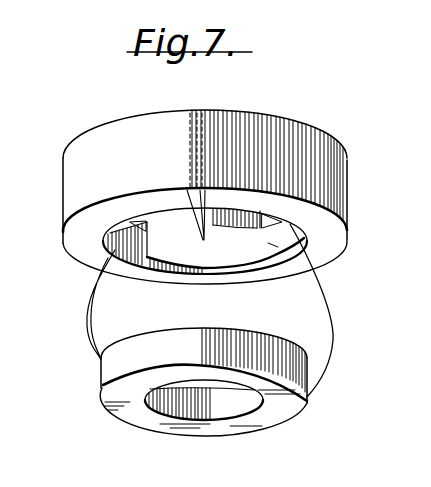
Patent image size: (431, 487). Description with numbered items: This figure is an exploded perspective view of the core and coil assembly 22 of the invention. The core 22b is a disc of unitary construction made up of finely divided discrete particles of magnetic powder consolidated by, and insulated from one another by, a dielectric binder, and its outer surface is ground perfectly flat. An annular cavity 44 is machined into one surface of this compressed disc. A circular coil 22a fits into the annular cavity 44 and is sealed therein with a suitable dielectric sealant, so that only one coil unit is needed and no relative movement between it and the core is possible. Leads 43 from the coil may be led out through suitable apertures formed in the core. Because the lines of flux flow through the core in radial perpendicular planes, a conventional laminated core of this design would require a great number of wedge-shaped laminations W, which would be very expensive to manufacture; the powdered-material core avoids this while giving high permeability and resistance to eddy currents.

The core and coil assembly 22 is at (57, 92).
The circular coil 22a is at (279, 423).
The core 22b is at (123, 137).
The wedge-shaped laminations W is at (200, 113).
The leads 43 is at (338, 337).
The annular cavity 44 is at (273, 246).